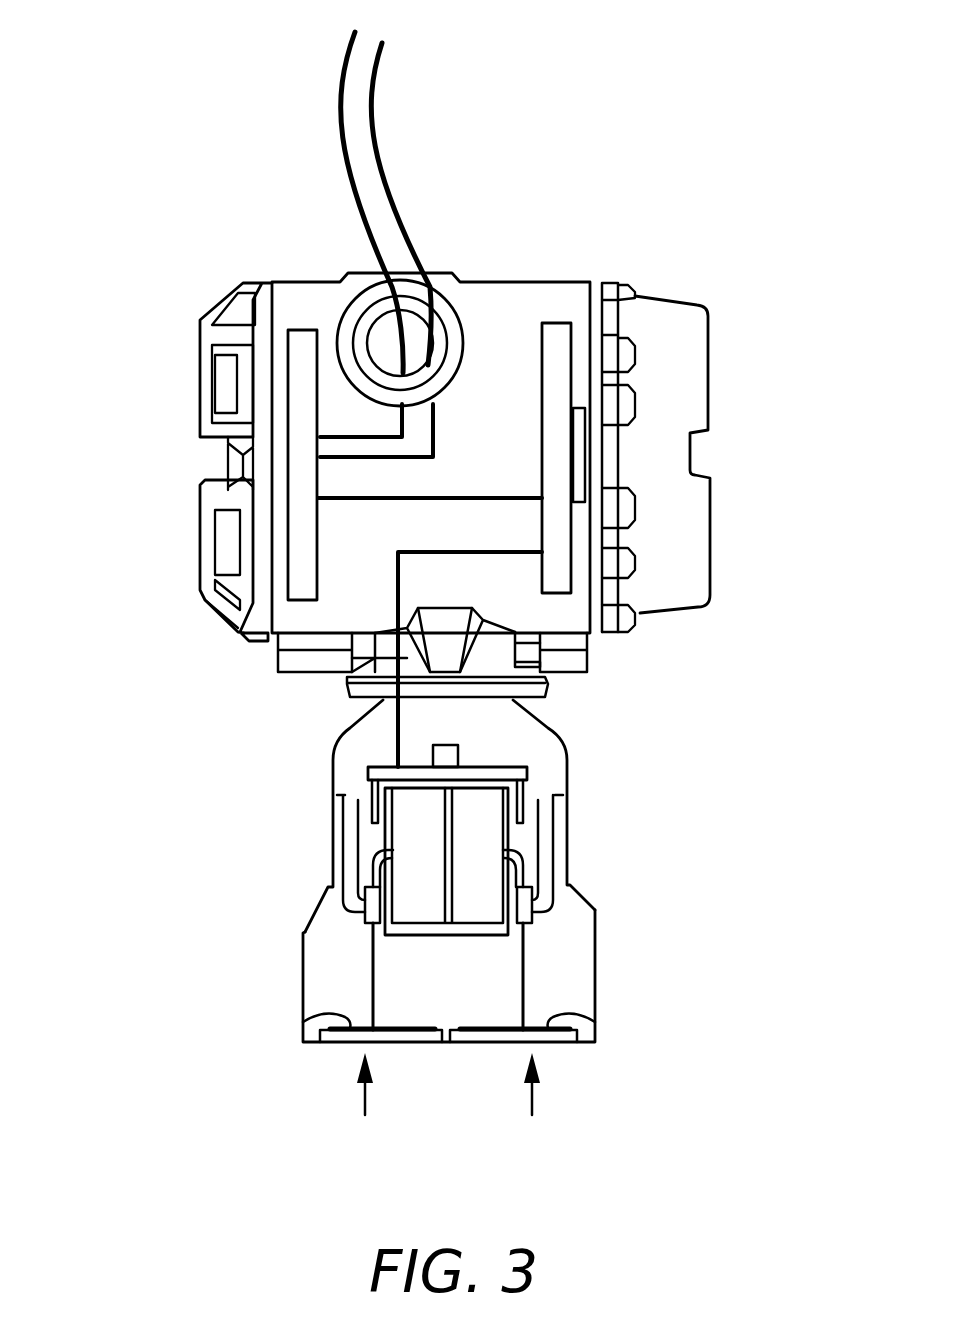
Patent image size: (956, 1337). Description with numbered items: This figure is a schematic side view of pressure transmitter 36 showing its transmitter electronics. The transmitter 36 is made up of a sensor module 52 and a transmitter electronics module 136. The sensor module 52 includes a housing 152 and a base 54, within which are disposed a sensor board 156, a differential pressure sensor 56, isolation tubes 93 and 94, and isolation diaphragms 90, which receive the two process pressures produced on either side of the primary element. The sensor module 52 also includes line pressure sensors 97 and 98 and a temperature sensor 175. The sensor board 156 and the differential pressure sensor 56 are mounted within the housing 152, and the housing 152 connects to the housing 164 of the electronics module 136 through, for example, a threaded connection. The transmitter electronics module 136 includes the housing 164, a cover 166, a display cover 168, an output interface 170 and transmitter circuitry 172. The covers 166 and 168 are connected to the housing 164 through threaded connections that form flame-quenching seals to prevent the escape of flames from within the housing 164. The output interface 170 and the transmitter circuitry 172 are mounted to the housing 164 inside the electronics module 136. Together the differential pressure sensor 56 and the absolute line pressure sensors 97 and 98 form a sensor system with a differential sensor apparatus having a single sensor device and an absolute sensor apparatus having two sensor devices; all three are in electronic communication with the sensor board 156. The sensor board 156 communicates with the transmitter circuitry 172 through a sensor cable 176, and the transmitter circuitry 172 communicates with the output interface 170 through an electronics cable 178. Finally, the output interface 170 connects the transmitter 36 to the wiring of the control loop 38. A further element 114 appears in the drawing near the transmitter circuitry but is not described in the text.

The pressure transmitter 36 is at (165, 207).
The control loop 38 is at (384, 104).
The sensor module 52 is at (585, 822).
The base 54 is at (577, 980).
The differential pressure sensor 56 is at (487, 802).
The isolation diaphragms 90 is at (345, 1015).
The isolation tube 93 is at (370, 935).
The isolation tube 94 is at (545, 920).
The line pressure sensor 97 is at (363, 788).
The line pressure sensor 98 is at (528, 745).
The electronics connector 114 is at (580, 455).
The transmitter electronics module 136 is at (548, 284).
The housing 152 is at (463, 742).
The sensor board 156 is at (370, 770).
The housing 164 is at (490, 282).
The cover 166 is at (212, 498).
The display cover 168 is at (702, 577).
The output interface 170 is at (307, 282).
The transmitter circuitry 172 is at (545, 337).
The temperature sensor 175 is at (508, 712).
The sensor cable 176 is at (372, 718).
The electronics cable 178 is at (435, 507).